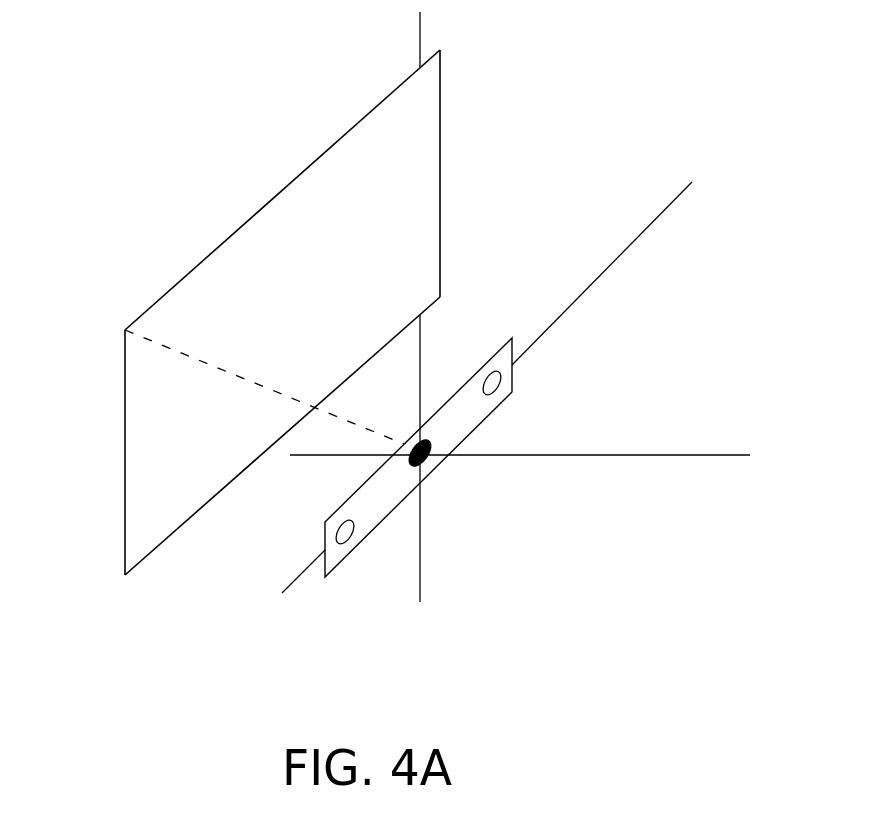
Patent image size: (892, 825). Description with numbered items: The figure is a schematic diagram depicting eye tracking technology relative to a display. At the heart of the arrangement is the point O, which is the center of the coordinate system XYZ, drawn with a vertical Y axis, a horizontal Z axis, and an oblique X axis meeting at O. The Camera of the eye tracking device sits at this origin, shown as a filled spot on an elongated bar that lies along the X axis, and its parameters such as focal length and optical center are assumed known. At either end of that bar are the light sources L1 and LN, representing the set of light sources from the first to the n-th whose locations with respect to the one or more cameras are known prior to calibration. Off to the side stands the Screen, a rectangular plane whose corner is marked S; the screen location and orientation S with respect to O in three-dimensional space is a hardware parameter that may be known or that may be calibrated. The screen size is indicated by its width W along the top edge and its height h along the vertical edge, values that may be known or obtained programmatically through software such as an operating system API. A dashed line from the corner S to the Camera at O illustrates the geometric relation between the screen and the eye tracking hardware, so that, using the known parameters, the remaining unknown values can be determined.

The screen S is at (253, 364).
The screen height h is at (112, 452).
The screen width W is at (282, 190).
The display screen Screen is at (270, 312).
The X axis X is at (489, 369).
The Y axis Y is at (403, 305).
The Z axis Z is at (520, 436).
The coordinate system center O is at (429, 467).
The camera Camera is at (435, 461).
The first light source L1 is at (364, 550).
The n-th light source LN is at (512, 403).